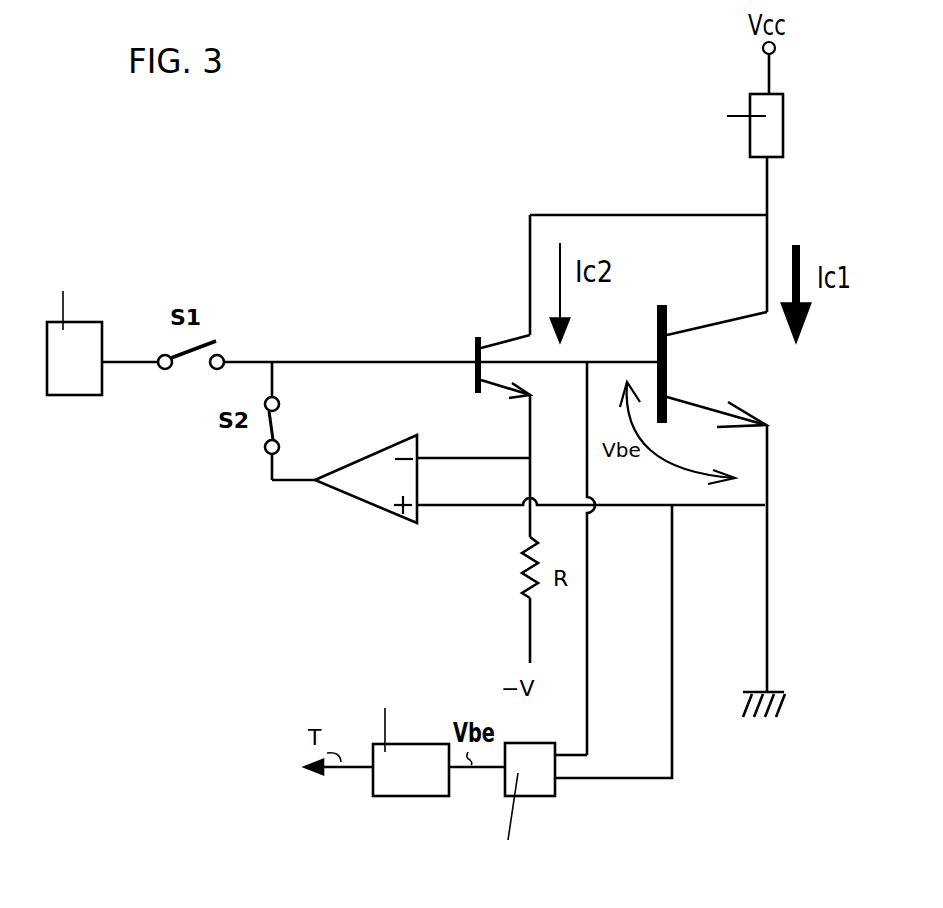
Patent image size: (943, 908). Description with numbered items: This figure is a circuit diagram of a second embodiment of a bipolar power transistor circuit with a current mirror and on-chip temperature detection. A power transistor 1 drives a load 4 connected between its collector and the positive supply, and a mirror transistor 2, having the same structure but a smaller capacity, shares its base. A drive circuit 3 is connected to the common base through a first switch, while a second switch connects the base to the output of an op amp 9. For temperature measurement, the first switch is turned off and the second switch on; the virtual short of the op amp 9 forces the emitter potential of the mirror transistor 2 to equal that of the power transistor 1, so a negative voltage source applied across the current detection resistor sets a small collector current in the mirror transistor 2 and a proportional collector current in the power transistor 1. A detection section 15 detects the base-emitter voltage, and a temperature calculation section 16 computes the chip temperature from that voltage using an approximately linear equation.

The power transistor 1 is at (665, 306).
The mirror transistor 2 is at (477, 337).
The drive circuit 3 is at (90, 313).
The load 4 is at (784, 150).
The op amp 9 is at (365, 456).
The Vbe detection section 15 is at (528, 797).
The temperature calculation section 16 is at (403, 797).